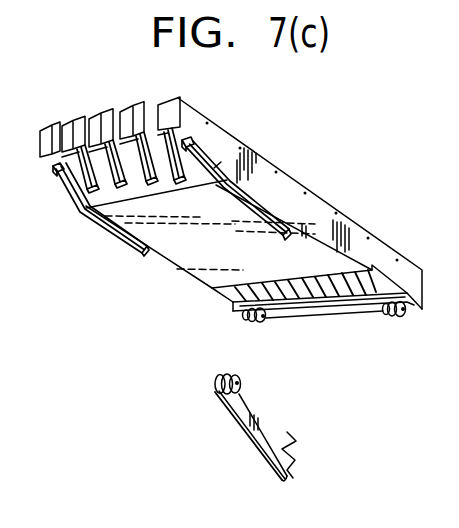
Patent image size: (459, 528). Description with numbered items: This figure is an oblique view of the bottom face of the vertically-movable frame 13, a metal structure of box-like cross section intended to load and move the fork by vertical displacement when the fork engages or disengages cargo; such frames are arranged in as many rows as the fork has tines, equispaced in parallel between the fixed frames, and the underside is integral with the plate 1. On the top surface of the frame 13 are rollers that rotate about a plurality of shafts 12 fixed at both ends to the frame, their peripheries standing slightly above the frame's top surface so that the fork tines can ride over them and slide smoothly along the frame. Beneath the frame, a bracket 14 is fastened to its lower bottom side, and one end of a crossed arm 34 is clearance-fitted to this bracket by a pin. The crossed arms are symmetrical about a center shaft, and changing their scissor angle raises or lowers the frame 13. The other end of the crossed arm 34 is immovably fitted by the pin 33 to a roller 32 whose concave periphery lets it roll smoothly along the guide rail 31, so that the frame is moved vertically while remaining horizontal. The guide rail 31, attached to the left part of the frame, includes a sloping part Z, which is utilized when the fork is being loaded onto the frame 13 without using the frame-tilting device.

The base plate / frame 1 is at (172, 252).
The shaft 12 is at (218, 136).
The vertically-movable frame 13 is at (208, 123).
The bracket 14 is at (401, 315).
The guide rail 31 is at (234, 201).
The sloping part Z is at (220, 163).
The roller 32 is at (241, 378).
The pin 33 is at (245, 398).
The crossed arm 34 is at (278, 448).